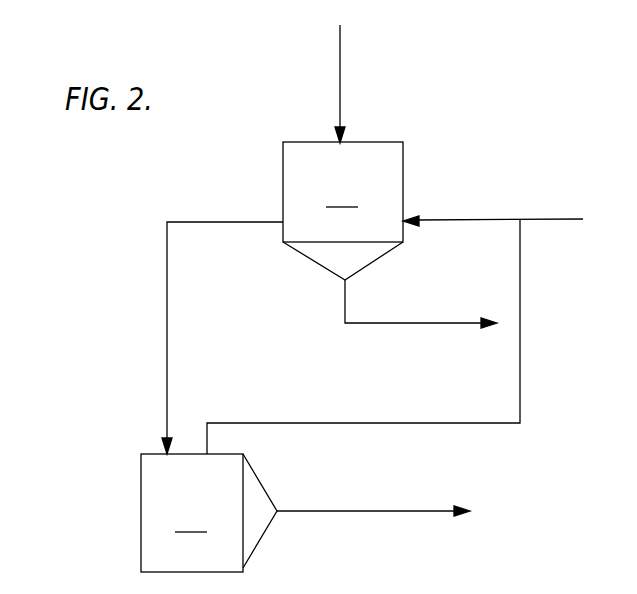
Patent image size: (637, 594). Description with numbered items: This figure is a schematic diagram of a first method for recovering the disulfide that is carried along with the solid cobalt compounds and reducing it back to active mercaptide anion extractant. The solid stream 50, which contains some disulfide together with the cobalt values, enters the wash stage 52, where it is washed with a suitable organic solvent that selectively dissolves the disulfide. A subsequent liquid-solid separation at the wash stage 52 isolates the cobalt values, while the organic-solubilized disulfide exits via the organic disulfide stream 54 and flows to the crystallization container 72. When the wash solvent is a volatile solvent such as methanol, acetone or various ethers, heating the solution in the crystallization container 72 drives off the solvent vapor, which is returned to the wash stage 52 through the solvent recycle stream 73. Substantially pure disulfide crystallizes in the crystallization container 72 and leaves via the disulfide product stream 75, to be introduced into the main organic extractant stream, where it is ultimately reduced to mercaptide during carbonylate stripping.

The solid stream 50 is at (340, 69).
The wash stage 52 is at (390, 235).
The organic disulfide stream 54 is at (165, 265).
The crystallization container 72 is at (209, 513).
The solvent recycle stream 73 is at (486, 423).
The disulfide product stream 75 is at (360, 512).